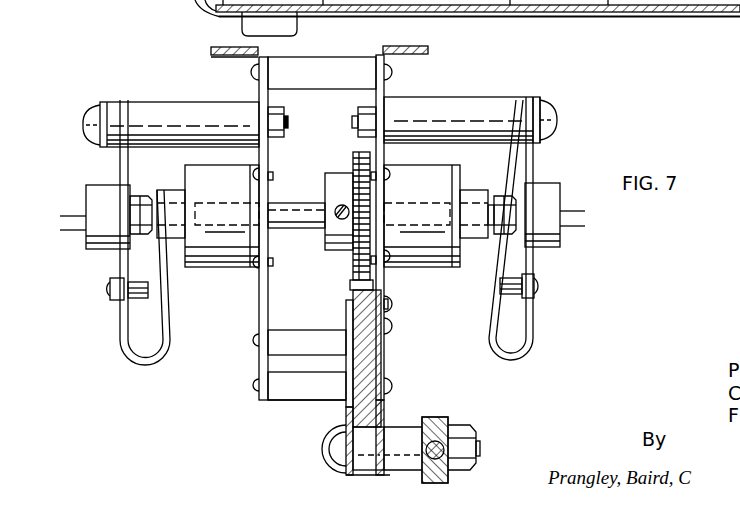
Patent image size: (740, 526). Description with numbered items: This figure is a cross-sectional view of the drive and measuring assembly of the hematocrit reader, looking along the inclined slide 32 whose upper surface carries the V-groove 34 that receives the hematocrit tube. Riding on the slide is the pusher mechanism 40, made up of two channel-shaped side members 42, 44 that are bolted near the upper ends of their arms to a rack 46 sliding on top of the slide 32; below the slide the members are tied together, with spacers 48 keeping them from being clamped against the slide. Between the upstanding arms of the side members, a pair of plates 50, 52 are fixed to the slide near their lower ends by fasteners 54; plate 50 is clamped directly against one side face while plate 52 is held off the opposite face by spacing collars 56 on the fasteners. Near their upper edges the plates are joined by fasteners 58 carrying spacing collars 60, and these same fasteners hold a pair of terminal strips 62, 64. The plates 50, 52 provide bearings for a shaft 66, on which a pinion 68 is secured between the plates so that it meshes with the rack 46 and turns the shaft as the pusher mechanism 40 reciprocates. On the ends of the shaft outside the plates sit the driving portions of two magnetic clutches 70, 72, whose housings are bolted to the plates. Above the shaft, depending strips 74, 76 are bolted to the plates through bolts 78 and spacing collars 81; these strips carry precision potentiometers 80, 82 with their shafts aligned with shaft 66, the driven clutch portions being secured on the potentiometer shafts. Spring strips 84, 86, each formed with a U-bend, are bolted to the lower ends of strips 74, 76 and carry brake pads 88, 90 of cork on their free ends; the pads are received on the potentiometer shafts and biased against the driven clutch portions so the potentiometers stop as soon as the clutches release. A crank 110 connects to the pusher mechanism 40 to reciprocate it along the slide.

The inclined slide 32 is at (371, 362).
The V-groove 34 is at (396, 321).
The pusher mechanism 40 is at (388, 418).
The side member 42 is at (430, 418).
The side member 44 is at (352, 420).
The rack 46 is at (394, 304).
The spacers 48 is at (368, 455).
The plate 50 is at (384, 280).
The plate 52 is at (257, 303).
The fasteners 54 is at (394, 326).
The spacing collars 56 is at (286, 338).
The fasteners 58 is at (392, 71).
The spacing collars 60 is at (317, 62).
The terminal strip 62 is at (429, 50).
The terminal strip 64 is at (212, 51).
The shaft 66 is at (295, 210).
The pinion 68 is at (334, 180).
The magnetic clutch 70 is at (470, 182).
The magnetic clutch 72 is at (171, 183).
The depending strip 74 is at (522, 165).
The depending strip 76 is at (122, 169).
The bolts 78 is at (98, 110).
The precision potentiometer 80 is at (548, 192).
The spacing collars 81 is at (166, 108).
The precision potentiometer 82 is at (94, 201).
The spring strip 84 is at (548, 332).
The spring strip 86 is at (132, 360).
The brake pad 88 is at (482, 198).
The brake pad 90 is at (162, 238).
The crank 110 is at (440, 478).